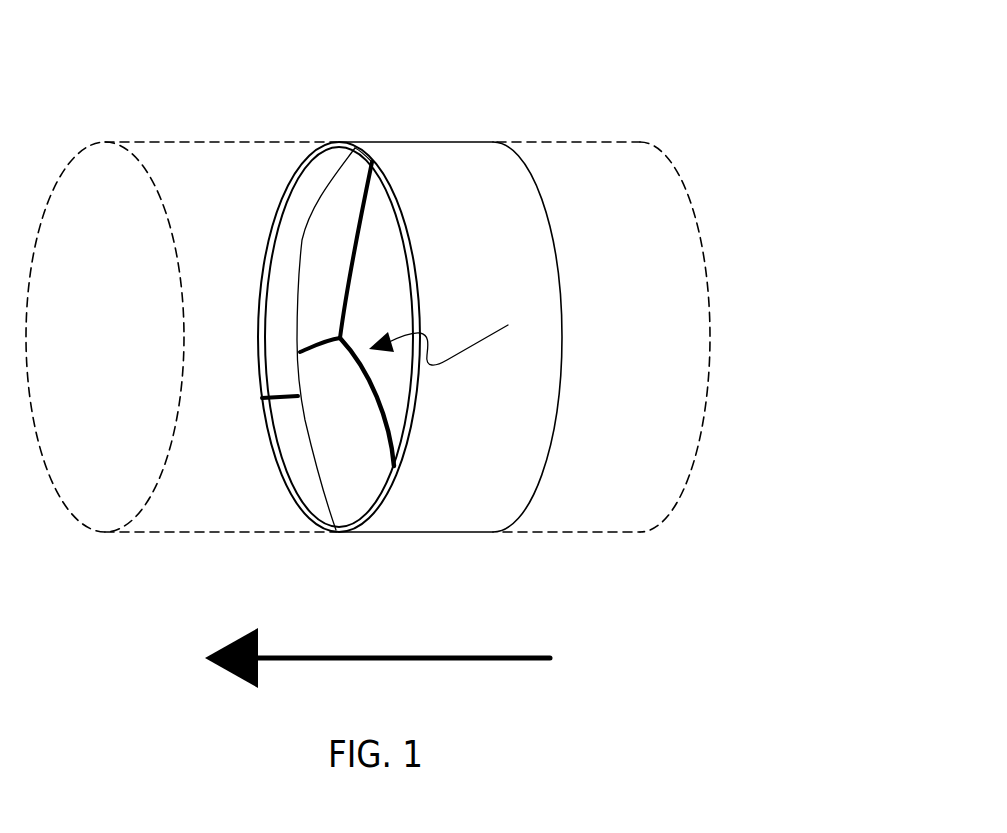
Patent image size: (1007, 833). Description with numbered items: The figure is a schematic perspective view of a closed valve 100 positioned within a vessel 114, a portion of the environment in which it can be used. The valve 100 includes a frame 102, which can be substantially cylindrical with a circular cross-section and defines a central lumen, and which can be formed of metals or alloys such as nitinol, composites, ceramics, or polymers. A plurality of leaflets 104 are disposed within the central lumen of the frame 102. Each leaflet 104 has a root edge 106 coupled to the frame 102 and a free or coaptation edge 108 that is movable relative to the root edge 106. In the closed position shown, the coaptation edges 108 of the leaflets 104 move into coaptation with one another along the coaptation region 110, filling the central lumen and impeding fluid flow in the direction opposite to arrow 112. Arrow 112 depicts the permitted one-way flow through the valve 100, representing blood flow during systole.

The valve 100 is at (442, 163).
The frame 102 is at (485, 502).
The leaflets 104 is at (330, 243).
The root edge 106 is at (307, 232).
The coaptation edge 108 is at (262, 400).
The coaptation region 110 is at (448, 332).
The arrow 112 is at (475, 660).
The vessel 114 is at (568, 140).